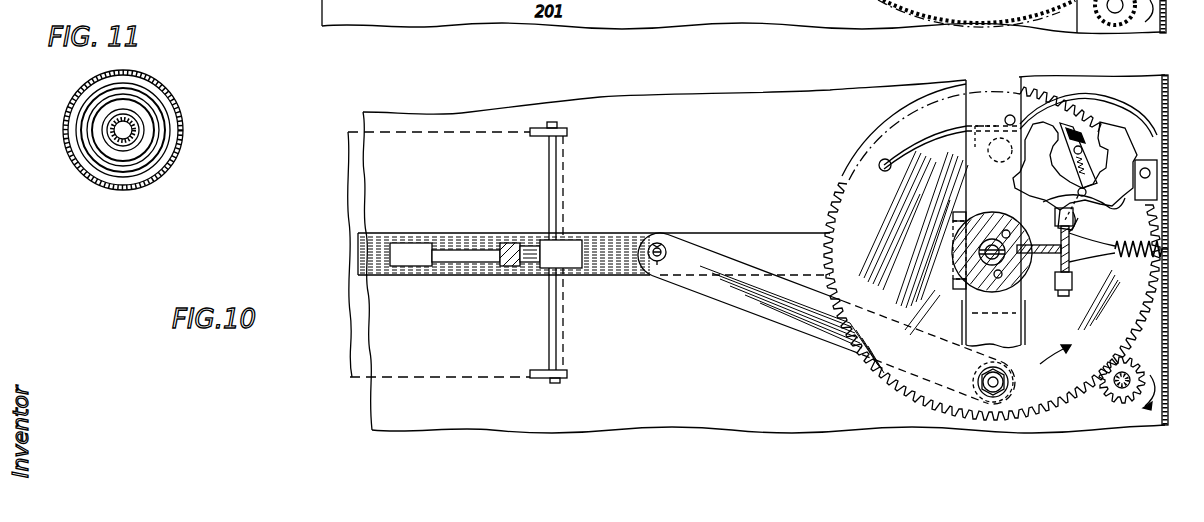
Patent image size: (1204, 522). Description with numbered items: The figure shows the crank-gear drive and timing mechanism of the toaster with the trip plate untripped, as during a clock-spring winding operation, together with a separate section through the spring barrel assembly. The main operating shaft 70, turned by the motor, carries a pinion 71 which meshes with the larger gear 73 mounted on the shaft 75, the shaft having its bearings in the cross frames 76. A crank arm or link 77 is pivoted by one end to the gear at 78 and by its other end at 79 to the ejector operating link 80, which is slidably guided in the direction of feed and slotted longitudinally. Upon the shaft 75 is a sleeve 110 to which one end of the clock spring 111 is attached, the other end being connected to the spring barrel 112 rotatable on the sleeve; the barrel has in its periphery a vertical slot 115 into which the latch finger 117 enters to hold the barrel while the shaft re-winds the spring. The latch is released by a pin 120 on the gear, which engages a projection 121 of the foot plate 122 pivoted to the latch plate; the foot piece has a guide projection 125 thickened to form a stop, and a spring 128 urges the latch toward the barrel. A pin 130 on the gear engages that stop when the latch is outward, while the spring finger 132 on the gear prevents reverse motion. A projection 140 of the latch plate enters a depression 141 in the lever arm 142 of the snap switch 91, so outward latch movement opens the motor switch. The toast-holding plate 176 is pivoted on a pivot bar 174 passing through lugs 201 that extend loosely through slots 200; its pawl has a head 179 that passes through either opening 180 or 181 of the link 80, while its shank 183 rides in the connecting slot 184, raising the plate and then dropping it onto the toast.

In FIG. 10, the main operating shaft 70 is at (1121, 390).
In FIG. 10, the pinion 71 is at (1112, 392).
In FIG. 10, the gear 73 is at (832, 197).
In FIG. 11, the shaft 75 is at (130, 135).
In FIG. 10, the shaft 75 is at (982, 253).
In FIG. 10, the cross frames 76 is at (966, 88).
In FIG. 10, the crank arm or link 77 is at (760, 300).
In FIG. 10, the pivot 78 is at (989, 396).
In FIG. 10, the pivot 79 is at (664, 246).
In FIG. 10, the ejector operating link 80 is at (458, 232).
In FIG. 10, the snap switch 91 is at (1065, 125).
In FIG. 11, the sleeve 110 is at (110, 143).
In FIG. 10, the sleeve 110 is at (970, 283).
In FIG. 11, the clock spring 111 is at (170, 132).
In FIG. 11, the spring barrel 112 is at (178, 103).
In FIG. 10, the spring barrel 112 is at (952, 258).
In FIG. 10, the vertical slot 115 is at (1050, 244).
In FIG. 10, the latch finger 117 is at (1056, 290).
In FIG. 10, the pin 120 is at (992, 236).
In FIG. 10, the projection 121 is at (975, 320).
In FIG. 10, the foot plate 122 is at (1041, 361).
In FIG. 10, the guide projection 125 is at (1072, 294).
In FIG. 10, the spring 128 is at (1142, 260).
In FIG. 10, the pin 130 is at (1009, 114).
In FIG. 10, the spring finger 132 is at (908, 142).
In FIG. 10, the projection 140 is at (1082, 226).
In FIG. 10, the depression 141 is at (1086, 194).
In FIG. 10, the snap switch lever arm 142 is at (1105, 206).
In FIG. 10, the pivot bar 174 is at (560, 180).
In FIG. 10, the plate 176 is at (352, 205).
In FIG. 10, the head 179 is at (508, 264).
In FIG. 10, the opening 180 is at (568, 245).
In FIG. 10, the opening 181 is at (418, 262).
In FIG. 10, the shank portion 183 is at (530, 264).
In FIG. 10, the slot 184 is at (455, 263).
In FIG. 10, the slots 200 is at (568, 131).
In FIG. 10, the lugs 201 is at (552, 122).